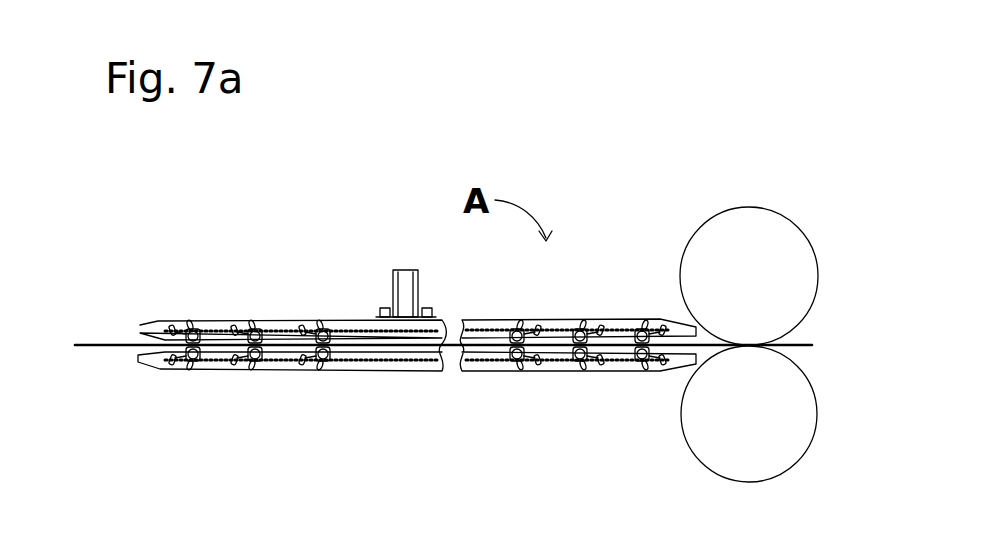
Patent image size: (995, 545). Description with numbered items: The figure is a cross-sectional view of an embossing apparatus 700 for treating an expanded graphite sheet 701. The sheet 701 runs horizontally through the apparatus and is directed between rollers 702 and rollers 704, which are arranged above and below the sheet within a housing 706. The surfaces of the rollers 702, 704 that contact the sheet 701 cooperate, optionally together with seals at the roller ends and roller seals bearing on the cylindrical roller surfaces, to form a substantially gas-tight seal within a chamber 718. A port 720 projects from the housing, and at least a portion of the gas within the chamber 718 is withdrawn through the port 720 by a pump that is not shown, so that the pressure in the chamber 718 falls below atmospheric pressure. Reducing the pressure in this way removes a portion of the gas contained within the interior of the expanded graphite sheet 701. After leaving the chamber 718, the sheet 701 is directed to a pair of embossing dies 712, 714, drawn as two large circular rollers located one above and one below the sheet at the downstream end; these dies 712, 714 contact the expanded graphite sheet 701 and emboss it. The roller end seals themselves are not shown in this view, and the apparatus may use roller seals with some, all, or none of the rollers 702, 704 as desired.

The embossing apparatus 700 is at (268, 186).
The expanded graphite sheet 701 is at (108, 345).
The rollers 702 is at (322, 330).
The rollers 704 is at (640, 359).
The housing 706 is at (358, 370).
The embossing die 712 is at (686, 243).
The embossing die 714 is at (686, 444).
The chamber 718 is at (476, 335).
The port 720 is at (408, 270).